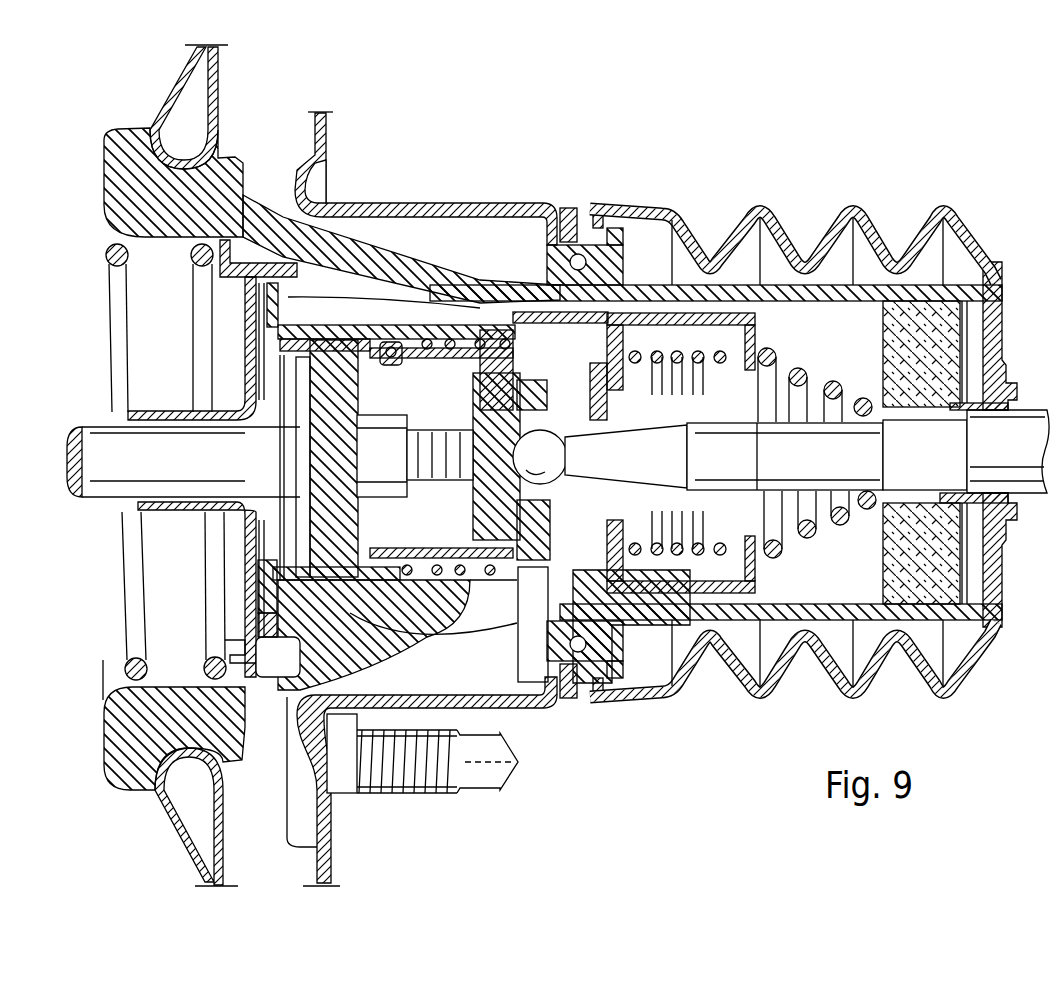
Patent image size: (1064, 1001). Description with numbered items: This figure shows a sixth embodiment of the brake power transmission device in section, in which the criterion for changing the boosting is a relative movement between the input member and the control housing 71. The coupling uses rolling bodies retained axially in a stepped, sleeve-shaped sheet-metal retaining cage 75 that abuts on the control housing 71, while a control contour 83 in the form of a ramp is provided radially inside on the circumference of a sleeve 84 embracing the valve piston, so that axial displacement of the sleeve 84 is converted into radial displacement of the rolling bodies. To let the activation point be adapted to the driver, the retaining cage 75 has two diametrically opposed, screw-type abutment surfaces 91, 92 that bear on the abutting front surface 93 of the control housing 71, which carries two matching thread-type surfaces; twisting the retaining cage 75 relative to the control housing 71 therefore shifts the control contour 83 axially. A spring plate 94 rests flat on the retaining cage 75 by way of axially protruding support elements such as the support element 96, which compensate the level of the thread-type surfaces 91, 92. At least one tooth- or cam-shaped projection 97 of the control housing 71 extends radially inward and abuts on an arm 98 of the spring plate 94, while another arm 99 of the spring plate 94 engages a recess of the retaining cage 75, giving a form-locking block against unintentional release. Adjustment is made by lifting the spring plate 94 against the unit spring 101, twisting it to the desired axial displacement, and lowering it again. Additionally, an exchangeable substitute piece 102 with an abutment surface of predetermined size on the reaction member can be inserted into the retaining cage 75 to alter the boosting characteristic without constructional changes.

The control housing 71 is at (837, 282).
The retaining cage 75 is at (400, 352).
The control contour 83 is at (357, 437).
The sleeve 84 is at (480, 420).
The abutment surface 91 is at (298, 296).
The abutment surface 92 is at (405, 645).
The abutting front surface 93 is at (258, 590).
The spring plate 94 is at (232, 648).
The support element 96 is at (266, 612).
The projection 97 is at (277, 668).
The arm 98 is at (222, 665).
The arm 99 is at (282, 260).
The unit spring 101 is at (197, 252).
The substitute piece 102 is at (352, 395).